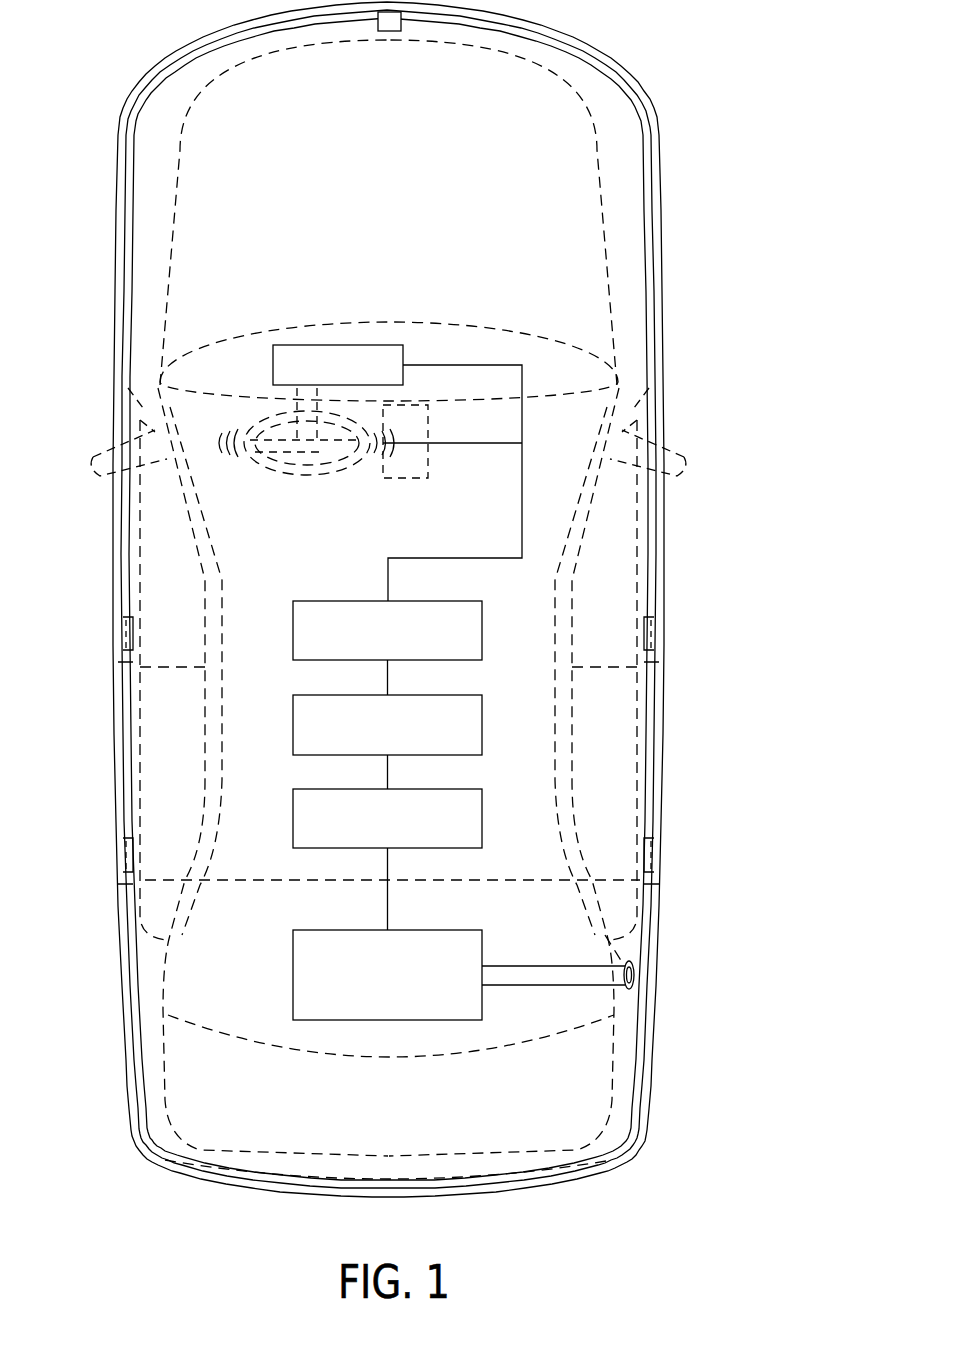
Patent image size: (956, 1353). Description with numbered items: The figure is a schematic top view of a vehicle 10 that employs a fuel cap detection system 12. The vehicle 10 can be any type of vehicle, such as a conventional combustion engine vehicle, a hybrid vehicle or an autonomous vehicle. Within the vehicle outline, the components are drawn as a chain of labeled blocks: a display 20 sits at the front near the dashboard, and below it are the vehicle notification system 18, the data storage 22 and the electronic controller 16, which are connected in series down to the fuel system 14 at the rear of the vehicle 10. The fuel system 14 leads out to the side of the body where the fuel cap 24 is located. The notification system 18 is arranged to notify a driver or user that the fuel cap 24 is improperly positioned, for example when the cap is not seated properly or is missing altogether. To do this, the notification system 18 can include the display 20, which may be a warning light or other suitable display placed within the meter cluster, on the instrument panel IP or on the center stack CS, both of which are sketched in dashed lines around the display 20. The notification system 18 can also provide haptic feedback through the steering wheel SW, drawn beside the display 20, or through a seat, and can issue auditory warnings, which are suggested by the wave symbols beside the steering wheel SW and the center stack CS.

The vehicle 10 is at (732, 386).
The fuel cap detection system 12 is at (320, 578).
The fuel system 14 is at (387, 1020).
The electronic controller 16 is at (482, 818).
The vehicle notification system 18 is at (482, 630).
The display 20 is at (348, 345).
The data storage 22 is at (482, 724).
The fuel cap 24 is at (634, 975).
The instrument panel IP is at (409, 324).
The steering wheel SW is at (303, 474).
The center stack CS is at (428, 460).